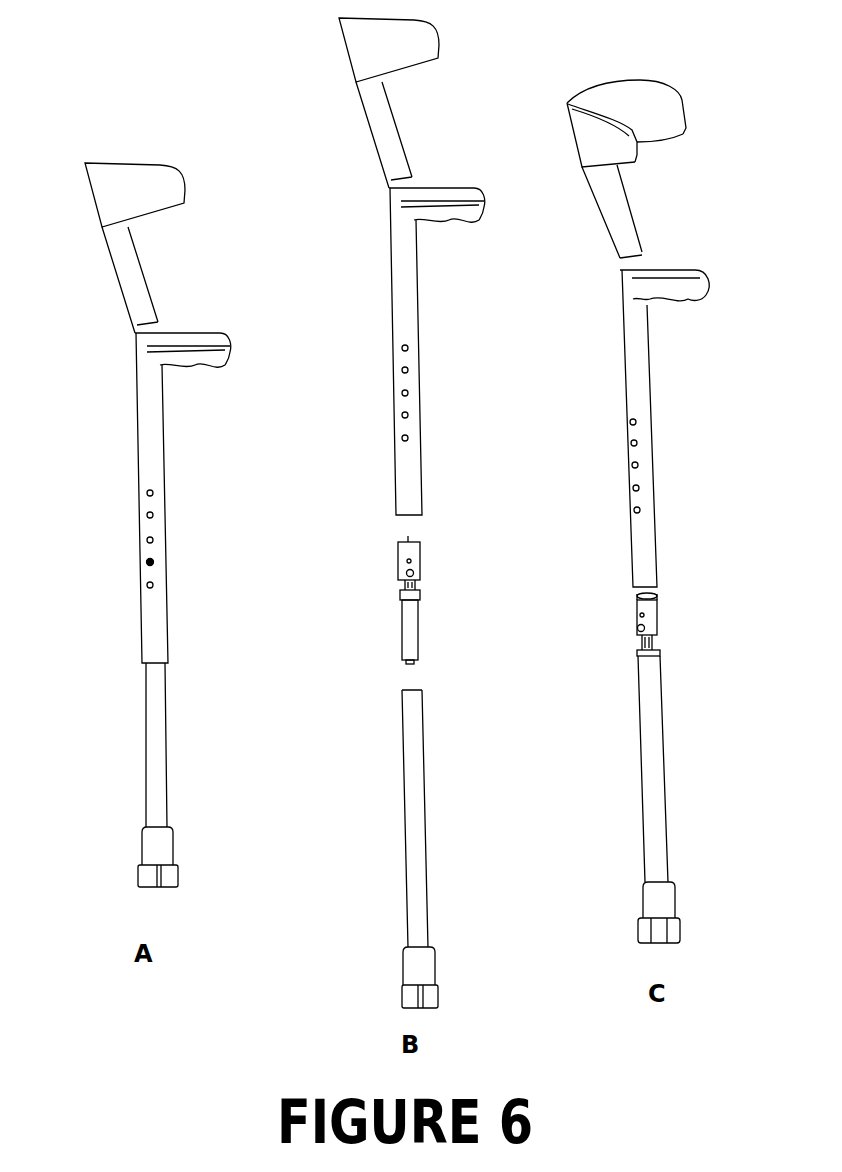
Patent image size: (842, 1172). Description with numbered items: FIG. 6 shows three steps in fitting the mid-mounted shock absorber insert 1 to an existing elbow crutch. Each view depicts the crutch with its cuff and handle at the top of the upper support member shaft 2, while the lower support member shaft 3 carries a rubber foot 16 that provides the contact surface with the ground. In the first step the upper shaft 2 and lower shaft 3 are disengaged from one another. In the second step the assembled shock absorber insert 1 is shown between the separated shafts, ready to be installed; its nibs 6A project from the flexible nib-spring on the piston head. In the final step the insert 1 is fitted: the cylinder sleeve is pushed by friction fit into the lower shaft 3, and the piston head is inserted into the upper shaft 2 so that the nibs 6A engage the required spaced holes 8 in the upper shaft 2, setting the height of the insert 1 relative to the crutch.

The shock absorber insert 1 is at (458, 568).
The upper support member shaft 2 is at (165, 467).
The lower support member shaft 3 is at (152, 727).
The spaced holes 8 is at (155, 585).
The nibs 6A is at (150, 562).
The foot 16 is at (162, 850).